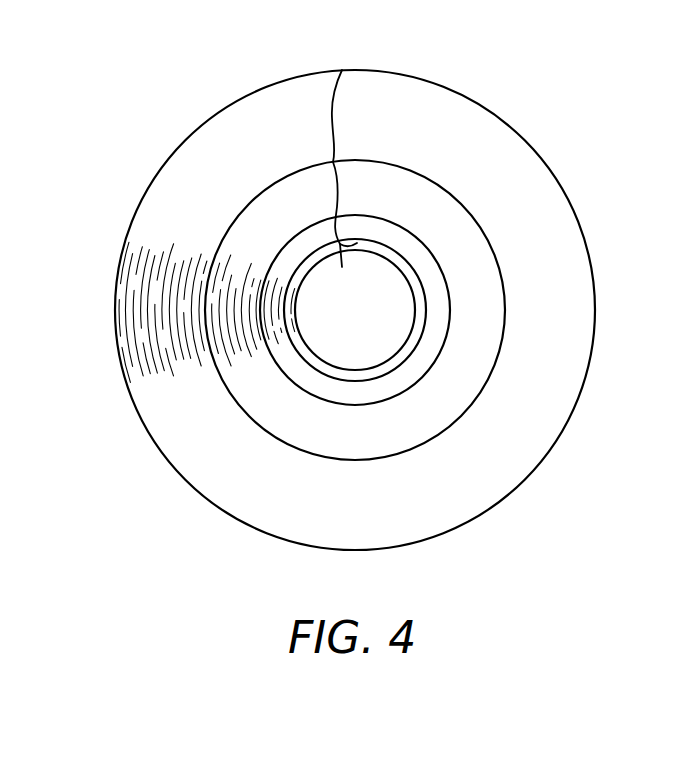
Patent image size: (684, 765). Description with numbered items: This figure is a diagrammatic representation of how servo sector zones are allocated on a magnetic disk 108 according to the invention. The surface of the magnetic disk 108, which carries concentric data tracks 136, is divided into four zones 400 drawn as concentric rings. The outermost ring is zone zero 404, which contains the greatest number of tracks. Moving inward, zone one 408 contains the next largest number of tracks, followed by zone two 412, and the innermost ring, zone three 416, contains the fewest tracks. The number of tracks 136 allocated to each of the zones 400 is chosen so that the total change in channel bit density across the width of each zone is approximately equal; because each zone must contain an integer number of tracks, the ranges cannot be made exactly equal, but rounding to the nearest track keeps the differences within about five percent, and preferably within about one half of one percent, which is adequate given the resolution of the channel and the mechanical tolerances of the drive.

The magnetic disk 108 is at (567, 427).
The data tracks 136 is at (141, 248).
The zones 400 is at (331, 161).
The zone 0 404 is at (558, 322).
The zone 1 408 is at (490, 275).
The zone 2 412 is at (415, 245).
The zone 3 416 is at (397, 365).